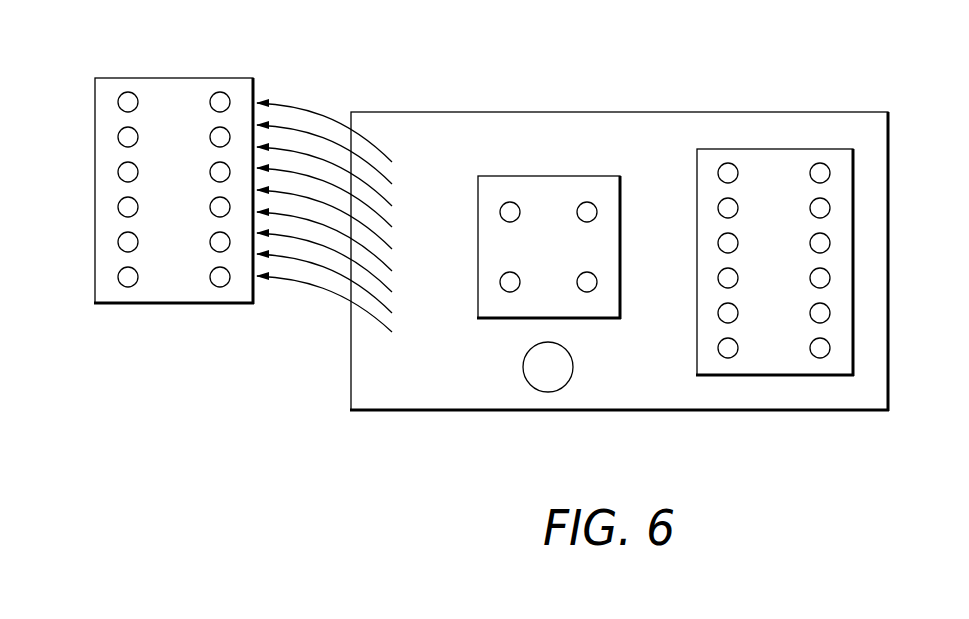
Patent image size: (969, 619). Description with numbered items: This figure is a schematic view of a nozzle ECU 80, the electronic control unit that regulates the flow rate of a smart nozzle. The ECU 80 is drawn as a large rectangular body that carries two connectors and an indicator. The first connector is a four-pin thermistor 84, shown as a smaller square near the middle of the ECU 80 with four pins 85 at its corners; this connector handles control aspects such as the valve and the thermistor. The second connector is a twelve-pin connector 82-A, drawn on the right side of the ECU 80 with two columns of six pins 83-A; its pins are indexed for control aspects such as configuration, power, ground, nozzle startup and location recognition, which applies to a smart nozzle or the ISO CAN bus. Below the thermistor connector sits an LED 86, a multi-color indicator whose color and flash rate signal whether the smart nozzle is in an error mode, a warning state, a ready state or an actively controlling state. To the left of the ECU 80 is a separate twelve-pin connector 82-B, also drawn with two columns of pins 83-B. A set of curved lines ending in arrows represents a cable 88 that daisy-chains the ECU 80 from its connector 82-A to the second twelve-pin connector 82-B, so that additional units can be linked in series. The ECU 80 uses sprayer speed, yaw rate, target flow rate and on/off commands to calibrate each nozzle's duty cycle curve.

The ECU 80 is at (487, 112).
The 12-pin connector 82-A is at (770, 149).
The 12-pin connector 82-B is at (170, 290).
The pins 83-A is at (812, 175).
The pins 83-B is at (120, 97).
The 4-pin thermistor 84 is at (550, 208).
The pins 85 is at (591, 205).
The LED 86 is at (545, 380).
The cable 88 is at (297, 103).